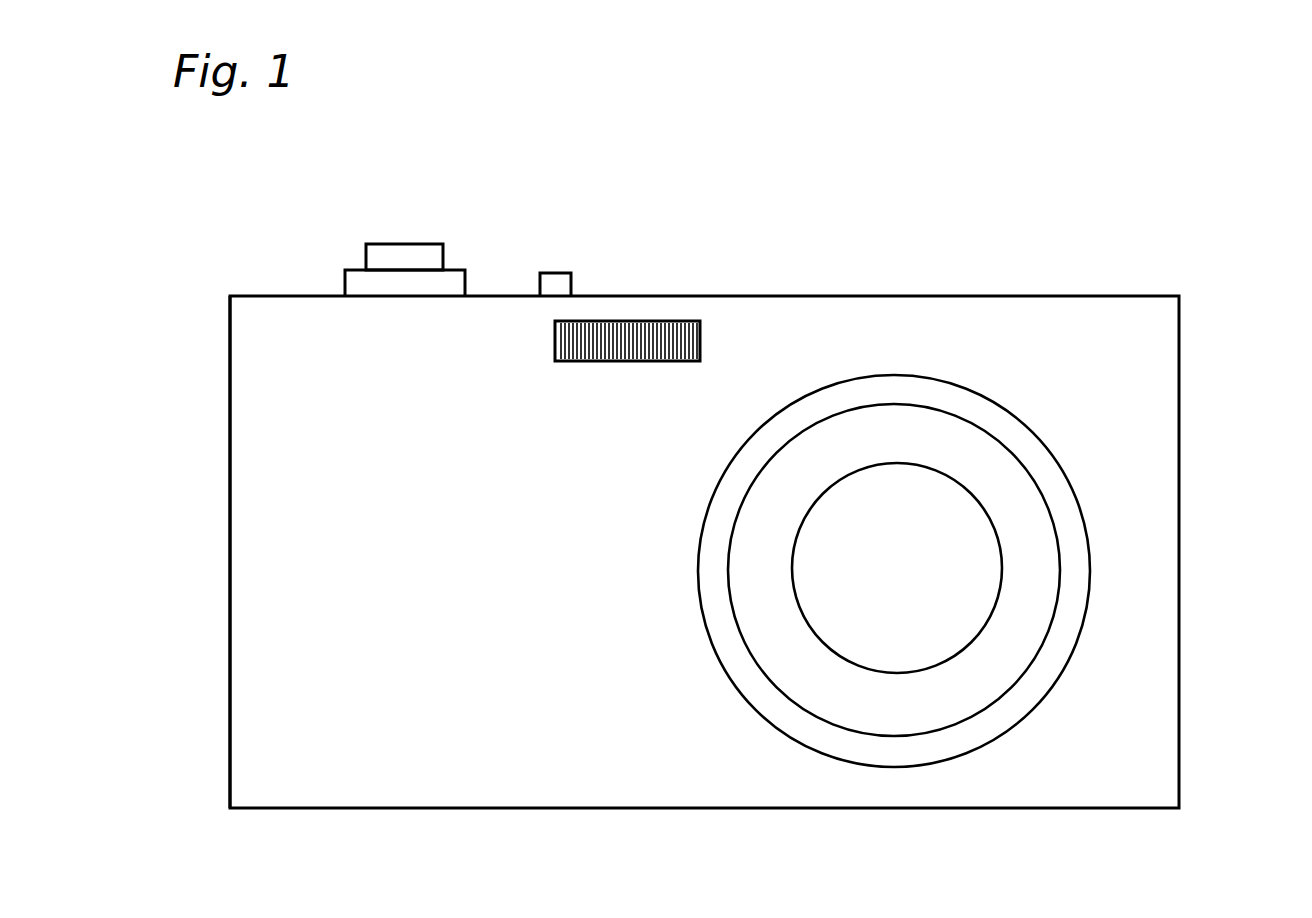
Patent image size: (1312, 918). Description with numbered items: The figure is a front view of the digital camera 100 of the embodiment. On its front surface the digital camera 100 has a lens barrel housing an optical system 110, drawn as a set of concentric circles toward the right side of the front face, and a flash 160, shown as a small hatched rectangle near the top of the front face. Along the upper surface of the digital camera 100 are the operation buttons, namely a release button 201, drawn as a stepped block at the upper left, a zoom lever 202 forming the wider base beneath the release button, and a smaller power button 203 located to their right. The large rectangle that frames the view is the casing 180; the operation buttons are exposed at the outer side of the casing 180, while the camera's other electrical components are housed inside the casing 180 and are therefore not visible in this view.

The digital camera 100 is at (1029, 142).
The optical system 110 is at (948, 590).
The flash 160 is at (640, 318).
The casing 180 is at (243, 525).
The release button 201 is at (392, 258).
The zoom lever 202 is at (450, 280).
The power button 203 is at (554, 283).